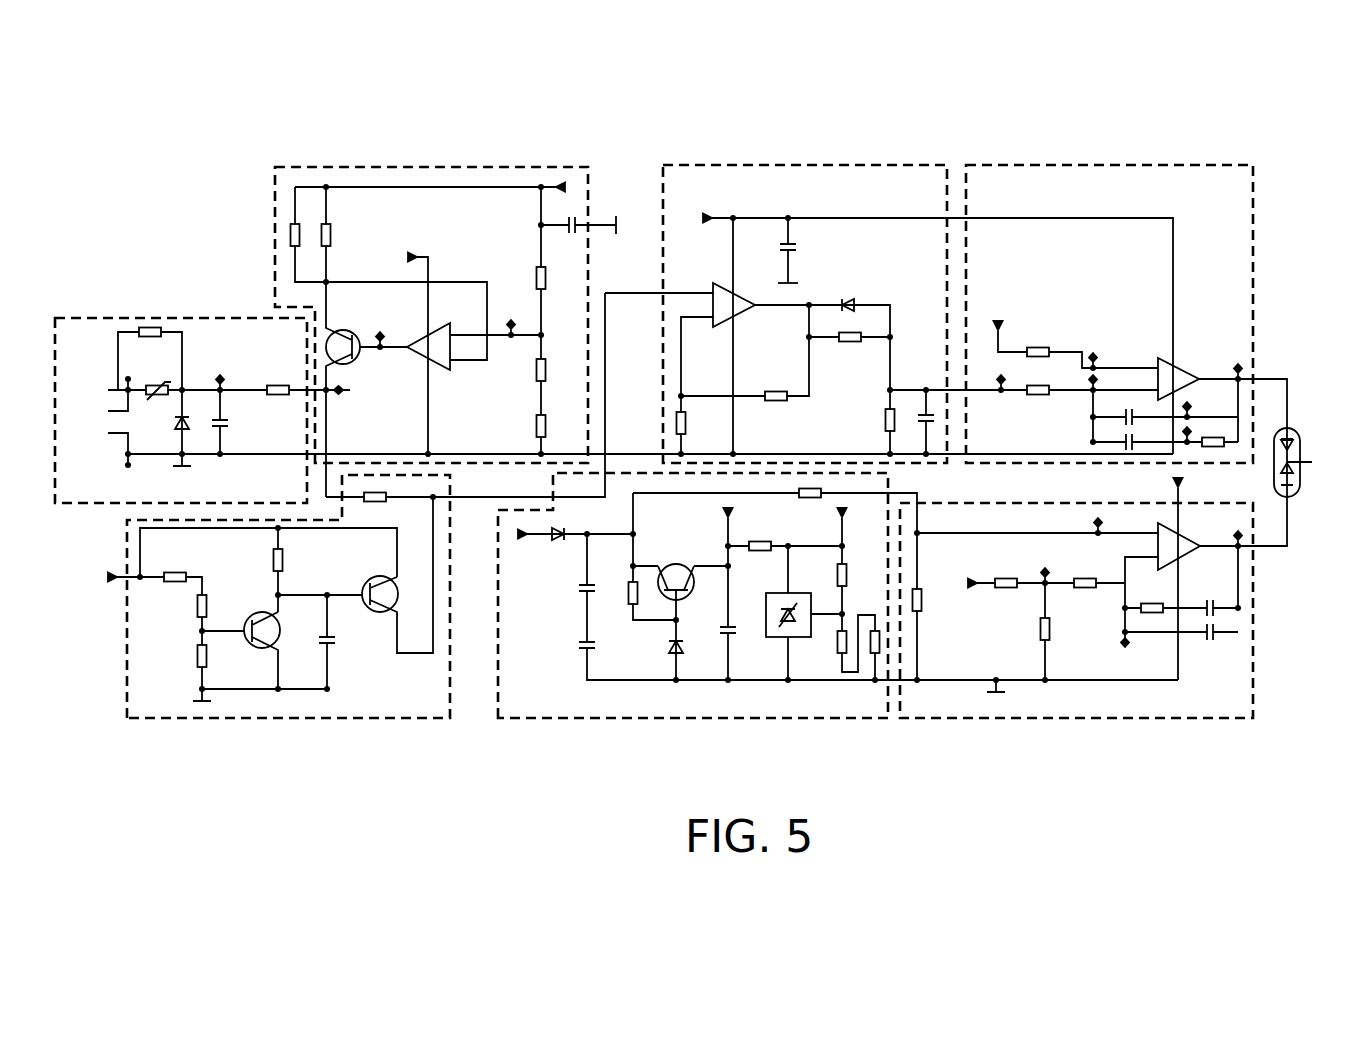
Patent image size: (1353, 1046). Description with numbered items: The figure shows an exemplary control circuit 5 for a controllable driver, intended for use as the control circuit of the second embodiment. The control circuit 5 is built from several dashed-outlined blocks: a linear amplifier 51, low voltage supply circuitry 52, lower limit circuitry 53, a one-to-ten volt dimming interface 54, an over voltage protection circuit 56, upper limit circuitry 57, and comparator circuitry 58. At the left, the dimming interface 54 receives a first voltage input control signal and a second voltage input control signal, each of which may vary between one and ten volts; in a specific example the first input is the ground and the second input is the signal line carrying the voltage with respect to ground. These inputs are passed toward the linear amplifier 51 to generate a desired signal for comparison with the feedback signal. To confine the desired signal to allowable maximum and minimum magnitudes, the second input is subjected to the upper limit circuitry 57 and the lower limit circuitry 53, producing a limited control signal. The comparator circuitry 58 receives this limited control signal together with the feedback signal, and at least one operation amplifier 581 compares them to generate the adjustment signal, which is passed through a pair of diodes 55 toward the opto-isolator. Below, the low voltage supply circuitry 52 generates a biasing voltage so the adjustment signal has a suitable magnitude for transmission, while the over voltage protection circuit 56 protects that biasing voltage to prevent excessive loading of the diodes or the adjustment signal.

The control circuit 5 is at (166, 152).
The linear amplifier 51 is at (802, 165).
The low voltage supply circuitry 52 is at (598, 722).
The lower limit circuitry 53 is at (287, 722).
The 1-10V dimming interface 54 is at (158, 318).
The pair of diodes 55 is at (1300, 428).
The over voltage protection circuit 56 is at (1077, 722).
The upper limit circuitry 57 is at (430, 165).
The comparator circuitry 58 is at (1110, 165).
The operation amplifier 581 is at (1146, 355).